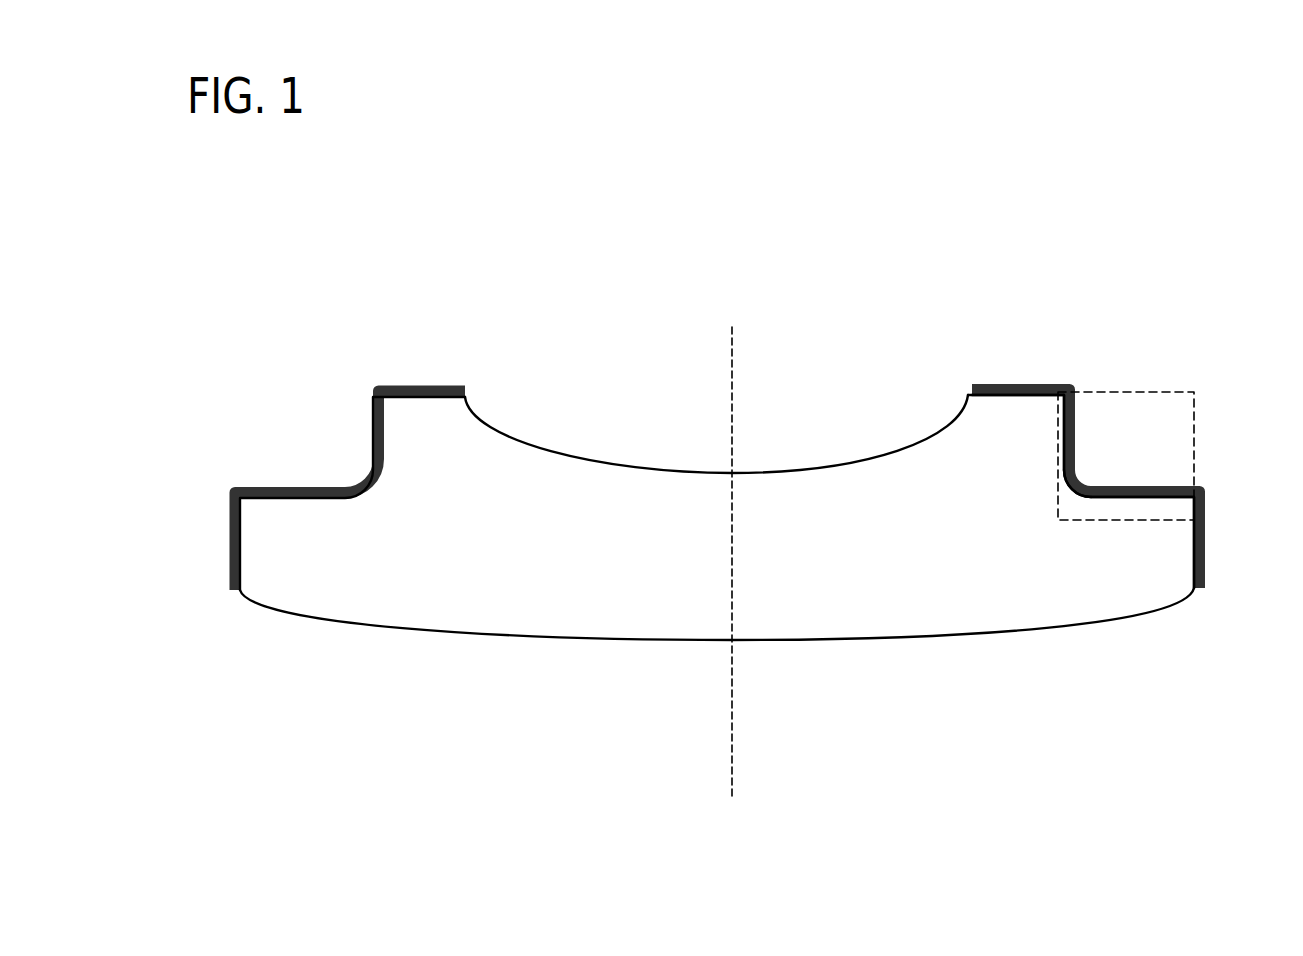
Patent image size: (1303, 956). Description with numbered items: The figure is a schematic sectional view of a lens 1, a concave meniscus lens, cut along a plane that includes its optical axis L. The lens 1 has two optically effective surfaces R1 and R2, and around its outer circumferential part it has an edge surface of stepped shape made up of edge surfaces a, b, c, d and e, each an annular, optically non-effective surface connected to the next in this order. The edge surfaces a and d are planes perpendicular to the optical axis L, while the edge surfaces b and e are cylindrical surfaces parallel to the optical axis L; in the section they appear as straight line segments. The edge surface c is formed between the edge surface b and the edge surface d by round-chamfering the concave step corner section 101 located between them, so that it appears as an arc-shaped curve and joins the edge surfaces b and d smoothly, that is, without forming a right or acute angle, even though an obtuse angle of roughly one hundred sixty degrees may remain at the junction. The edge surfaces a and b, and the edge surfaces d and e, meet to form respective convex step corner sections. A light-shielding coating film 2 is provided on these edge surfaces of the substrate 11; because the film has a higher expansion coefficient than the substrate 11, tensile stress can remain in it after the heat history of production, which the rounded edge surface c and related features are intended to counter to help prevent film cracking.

The lens 1 is at (620, 338).
The light-shielding coating film 2 is at (414, 386).
The substrate 11 is at (717, 551).
The concave step corner section 101 is at (1126, 439).
The edge surface a is at (1007, 392).
The edge surface b is at (1075, 409).
The edge surface c is at (1082, 483).
The edge surface d is at (1158, 488).
The edge surface e is at (1196, 549).
The optical axis L is at (746, 562).
The optically effective surface R1 is at (716, 434).
The optically effective surface R2 is at (717, 648).